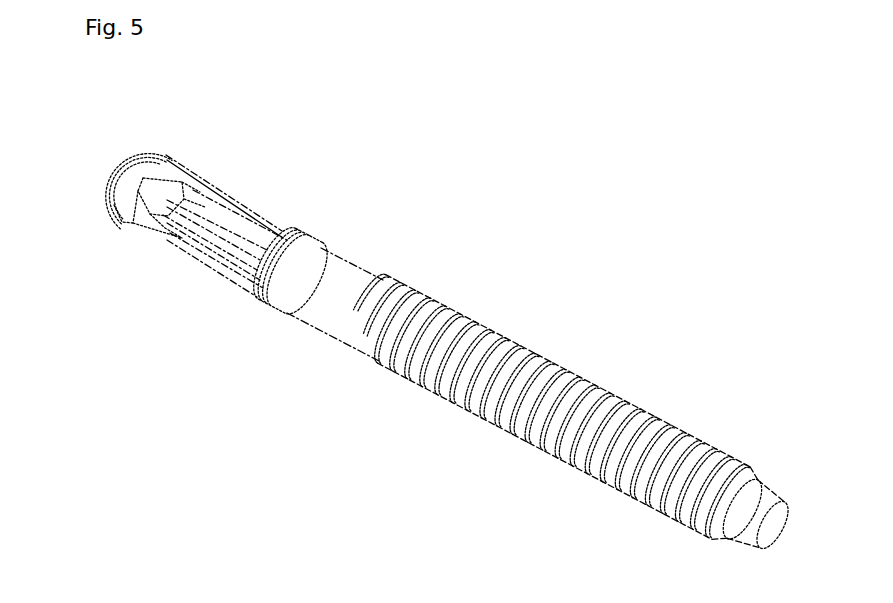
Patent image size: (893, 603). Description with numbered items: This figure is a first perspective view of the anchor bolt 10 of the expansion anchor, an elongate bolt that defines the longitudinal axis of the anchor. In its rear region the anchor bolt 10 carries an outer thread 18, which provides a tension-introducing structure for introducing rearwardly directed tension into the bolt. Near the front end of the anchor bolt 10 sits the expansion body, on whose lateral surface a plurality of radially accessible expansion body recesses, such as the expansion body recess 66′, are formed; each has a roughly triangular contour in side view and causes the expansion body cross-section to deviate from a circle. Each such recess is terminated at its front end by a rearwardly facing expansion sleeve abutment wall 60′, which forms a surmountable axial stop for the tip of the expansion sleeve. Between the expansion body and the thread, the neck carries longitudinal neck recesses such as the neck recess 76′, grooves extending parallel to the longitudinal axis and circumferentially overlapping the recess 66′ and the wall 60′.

The anchor bolt 10 is at (378, 288).
The outer thread 18 is at (633, 433).
The expansion sleeve abutment wall 60′ is at (157, 160).
The expansion body recess 66′ is at (168, 173).
The neck recess 76′ is at (233, 217).